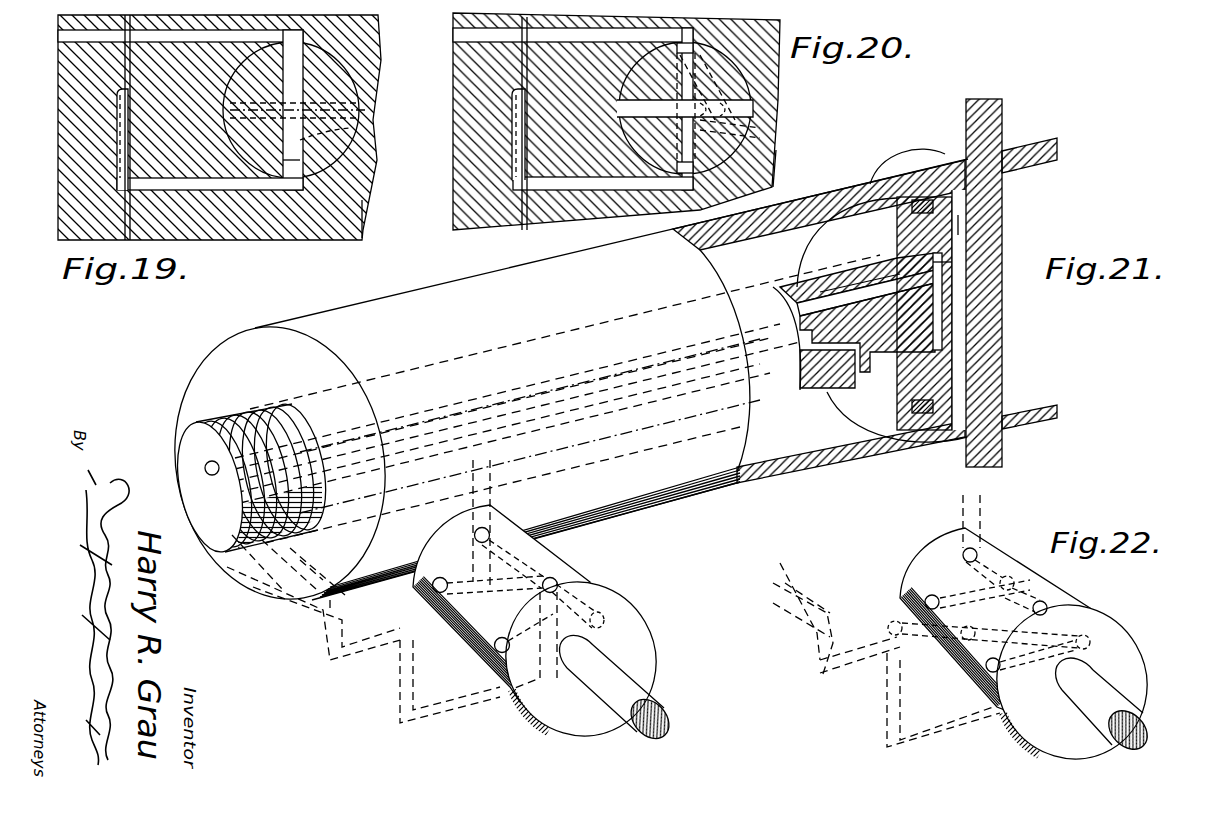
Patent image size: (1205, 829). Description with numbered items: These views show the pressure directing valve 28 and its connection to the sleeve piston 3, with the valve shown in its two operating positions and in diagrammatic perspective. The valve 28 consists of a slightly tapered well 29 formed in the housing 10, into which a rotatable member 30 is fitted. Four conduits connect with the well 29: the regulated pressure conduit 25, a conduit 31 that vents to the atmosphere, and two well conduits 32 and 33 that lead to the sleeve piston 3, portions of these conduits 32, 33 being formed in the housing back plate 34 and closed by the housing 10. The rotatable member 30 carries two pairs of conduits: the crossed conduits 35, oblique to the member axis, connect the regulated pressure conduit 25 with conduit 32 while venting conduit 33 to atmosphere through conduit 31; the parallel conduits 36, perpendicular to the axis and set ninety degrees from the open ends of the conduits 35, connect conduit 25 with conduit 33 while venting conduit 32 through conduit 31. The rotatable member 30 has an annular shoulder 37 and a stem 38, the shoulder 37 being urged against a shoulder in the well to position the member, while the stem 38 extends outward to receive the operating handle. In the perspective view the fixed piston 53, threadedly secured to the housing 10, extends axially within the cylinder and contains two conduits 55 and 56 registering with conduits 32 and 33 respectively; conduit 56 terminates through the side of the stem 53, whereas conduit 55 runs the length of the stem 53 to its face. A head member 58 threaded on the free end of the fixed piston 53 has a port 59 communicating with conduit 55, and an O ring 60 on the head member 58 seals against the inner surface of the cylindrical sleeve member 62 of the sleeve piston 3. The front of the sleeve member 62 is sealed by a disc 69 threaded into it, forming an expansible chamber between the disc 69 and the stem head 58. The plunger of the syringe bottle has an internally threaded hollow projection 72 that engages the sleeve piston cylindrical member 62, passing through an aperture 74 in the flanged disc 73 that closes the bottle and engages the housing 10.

In FIG. 21, the sleeve piston 3 is at (428, 287).
In FIG. 19, the housing 10 is at (303, 213).
In FIG. 20, the housing 10 is at (762, 171).
In FIG. 21, the regulated pressure conduit 25 is at (495, 498).
In FIG. 22, the regulated pressure conduit 25 is at (960, 518).
In FIG. 21, the pressure directing valve 28 is at (590, 578).
In FIG. 22, the pressure directing valve 28 is at (988, 534).
In FIG. 19, the well 29 is at (360, 88).
In FIG. 20, the well 29 is at (756, 88).
In FIG. 19, the rotatable member 30 is at (337, 66).
In FIG. 20, the rotatable member 30 is at (731, 70).
In FIG. 21, the rotatable member 30 is at (553, 560).
In FIG. 22, the rotatable member 30 is at (1030, 586).
In FIG. 19, the venting conduit 31 is at (147, 37).
In FIG. 20, the venting conduit 31 is at (550, 35).
In FIG. 21, the venting conduit 31 is at (415, 565).
In FIG. 22, the venting conduit 31 is at (890, 620).
In FIG. 19, the well conduit 32 is at (240, 188).
In FIG. 20, the well conduit 32 is at (560, 187).
In FIG. 21, the well conduit 32 is at (352, 575).
In FIG. 22, the well conduit 32 is at (830, 592).
In FIG. 21, the well conduit 33 is at (325, 614).
In FIG. 22, the well conduit 33 is at (797, 630).
In FIG. 19, the housing back plate 34 is at (76, 90).
In FIG. 20, the housing back plate 34 is at (470, 183).
In FIG. 19, the crossed conduits 35 is at (353, 127).
In FIG. 20, the crossed conduits 35 is at (762, 136).
In FIG. 21, the crossed conduits 35 is at (443, 578).
In FIG. 22, the crossed conduits 35 is at (980, 555).
In FIG. 19, the parallel conduits 36 is at (293, 160).
In FIG. 20, the parallel conduits 36 is at (745, 106).
In FIG. 21, the parallel conduits 36 is at (489, 537).
In FIG. 22, the parallel conduits 36 is at (928, 597).
In FIG. 21, the annular shoulder 37 is at (638, 648).
In FIG. 22, the annular shoulder 37 is at (1110, 662).
In FIG. 21, the stem 38 is at (648, 692).
In FIG. 22, the stem 38 is at (1125, 702).
In FIG. 21, the fixed piston 53 is at (198, 452).
In FIG. 21, the conduit 55 is at (205, 470).
In FIG. 21, the conduit 56 is at (203, 503).
In FIG. 21, the head member 58 is at (940, 372).
In FIG. 21, the port 59 is at (945, 258).
In FIG. 21, the O ring 60 is at (927, 172).
In FIG. 21, the sleeve member 62 is at (698, 484).
In FIG. 21, the disc 69 is at (1003, 300).
In FIG. 21, the hollow projection 72 is at (1025, 418).
In FIG. 21, the flanged disc 73 is at (967, 118).
In FIG. 21, the aperture 74 is at (990, 442).